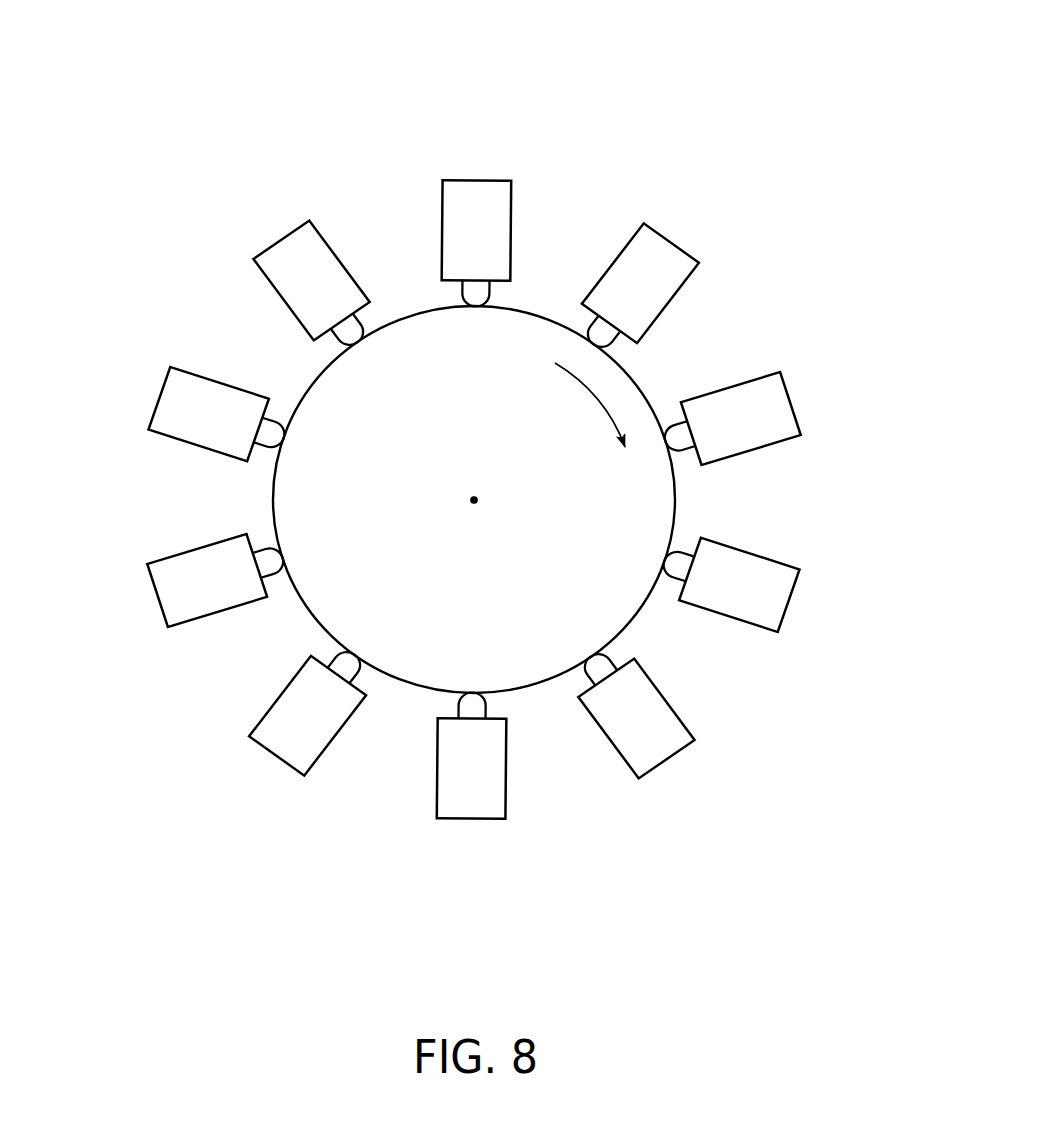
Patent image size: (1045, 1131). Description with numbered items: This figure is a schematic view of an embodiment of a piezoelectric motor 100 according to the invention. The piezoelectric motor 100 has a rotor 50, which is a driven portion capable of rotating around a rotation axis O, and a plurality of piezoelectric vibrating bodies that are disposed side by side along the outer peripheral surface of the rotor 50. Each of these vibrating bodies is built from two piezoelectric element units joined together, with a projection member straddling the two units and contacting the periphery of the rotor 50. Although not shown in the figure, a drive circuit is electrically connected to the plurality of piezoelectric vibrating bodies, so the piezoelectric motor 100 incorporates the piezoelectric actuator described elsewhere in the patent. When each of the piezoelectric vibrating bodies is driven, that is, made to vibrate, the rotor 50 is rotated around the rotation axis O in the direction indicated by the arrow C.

The piezoelectric motor 100 is at (658, 118).
The rotor 50 is at (678, 507).
The rotation axis O is at (478, 505).
The arrow indicating rotation direction C is at (590, 392).